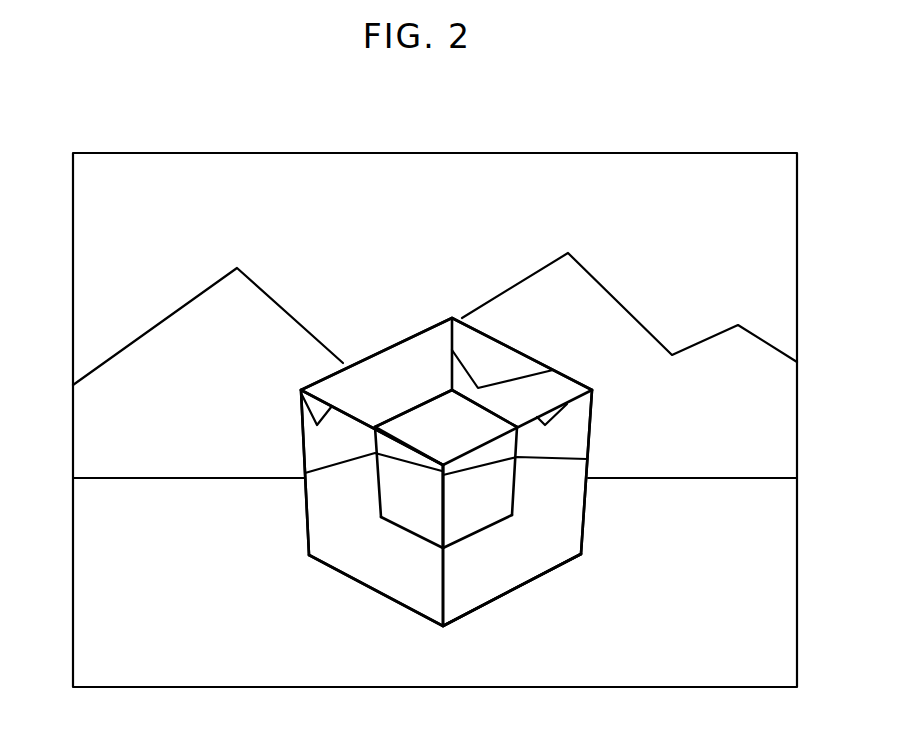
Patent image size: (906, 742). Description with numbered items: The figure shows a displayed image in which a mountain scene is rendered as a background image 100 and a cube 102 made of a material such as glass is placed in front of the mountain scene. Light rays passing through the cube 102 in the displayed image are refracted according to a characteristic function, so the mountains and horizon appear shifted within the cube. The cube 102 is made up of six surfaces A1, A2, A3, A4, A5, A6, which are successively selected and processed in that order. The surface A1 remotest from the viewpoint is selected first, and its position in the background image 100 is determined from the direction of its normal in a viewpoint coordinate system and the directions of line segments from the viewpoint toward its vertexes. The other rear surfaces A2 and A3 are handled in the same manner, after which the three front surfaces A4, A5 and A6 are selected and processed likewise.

The background image 100 is at (583, 177).
The cube 102 is at (586, 507).
The surface A1 is at (395, 393).
The rear surface A2 is at (540, 362).
The rear surface A3 is at (495, 600).
The front surface A4 is at (397, 345).
The front surface A5 is at (332, 508).
The front surface A6 is at (523, 557).